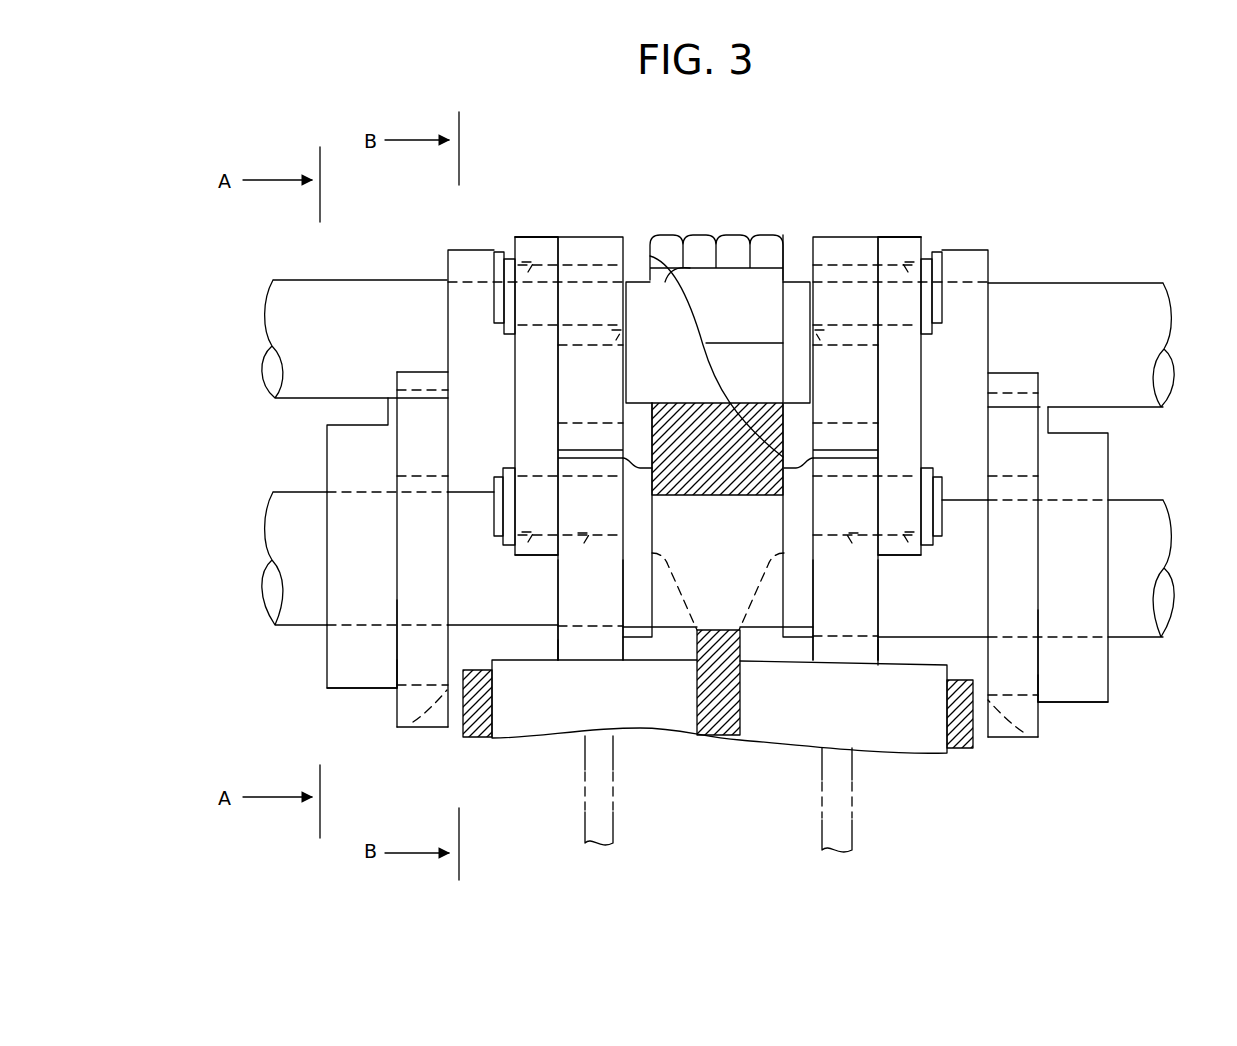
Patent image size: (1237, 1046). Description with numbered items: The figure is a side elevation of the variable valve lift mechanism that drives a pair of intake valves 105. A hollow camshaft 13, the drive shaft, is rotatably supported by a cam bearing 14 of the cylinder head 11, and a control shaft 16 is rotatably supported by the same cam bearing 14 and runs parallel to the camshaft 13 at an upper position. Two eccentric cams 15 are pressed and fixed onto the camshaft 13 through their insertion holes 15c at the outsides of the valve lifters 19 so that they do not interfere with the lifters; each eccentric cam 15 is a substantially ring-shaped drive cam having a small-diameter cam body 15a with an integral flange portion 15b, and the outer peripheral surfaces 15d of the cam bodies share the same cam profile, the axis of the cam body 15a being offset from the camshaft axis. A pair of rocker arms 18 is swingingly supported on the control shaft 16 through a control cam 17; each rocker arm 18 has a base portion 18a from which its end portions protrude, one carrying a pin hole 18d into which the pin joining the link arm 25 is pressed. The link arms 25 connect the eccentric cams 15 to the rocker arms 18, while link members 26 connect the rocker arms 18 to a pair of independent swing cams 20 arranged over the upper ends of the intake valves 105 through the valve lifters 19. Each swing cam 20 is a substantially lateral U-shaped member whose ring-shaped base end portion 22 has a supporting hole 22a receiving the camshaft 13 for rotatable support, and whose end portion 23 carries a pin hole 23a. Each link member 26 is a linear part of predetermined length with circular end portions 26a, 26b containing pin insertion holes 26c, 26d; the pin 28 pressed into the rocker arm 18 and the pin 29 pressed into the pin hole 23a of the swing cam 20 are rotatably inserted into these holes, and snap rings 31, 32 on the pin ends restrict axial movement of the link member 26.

The cylinder head 11 is at (470, 738).
The camshaft 13 is at (256, 598).
The cam bearing 14 is at (763, 233).
The eccentric cam 15 is at (352, 694).
The cam body 15a is at (423, 667).
The flange portion 15b is at (338, 668).
The insertion hole 15c is at (345, 618).
The outer peripheral surface 15d is at (396, 742).
The control shaft 16 is at (378, 290).
The control cam 17 is at (628, 343).
The rocker arm 18 is at (577, 233).
The base portion 18a is at (622, 394).
The pin hole 18d is at (610, 257).
The valve lifter 19 is at (546, 736).
The swing cam 20 is at (629, 588).
The base end portion 22 is at (656, 503).
The supporting hole 22a is at (534, 656).
The end portion 23 is at (592, 650).
The pin hole 23a is at (584, 548).
The link arm 25 is at (445, 730).
The link member 26 is at (505, 368).
The one end portion 26a is at (541, 237).
The other end portion 26b is at (526, 556).
The pin insertion hole 26c is at (527, 255).
The pin insertion hole 26d is at (516, 558).
The pin 28 is at (497, 254).
The pin 29 is at (495, 482).
The snap ring 31 is at (508, 259).
The snap ring 32 is at (505, 550).
The intake valve 105 is at (584, 800).